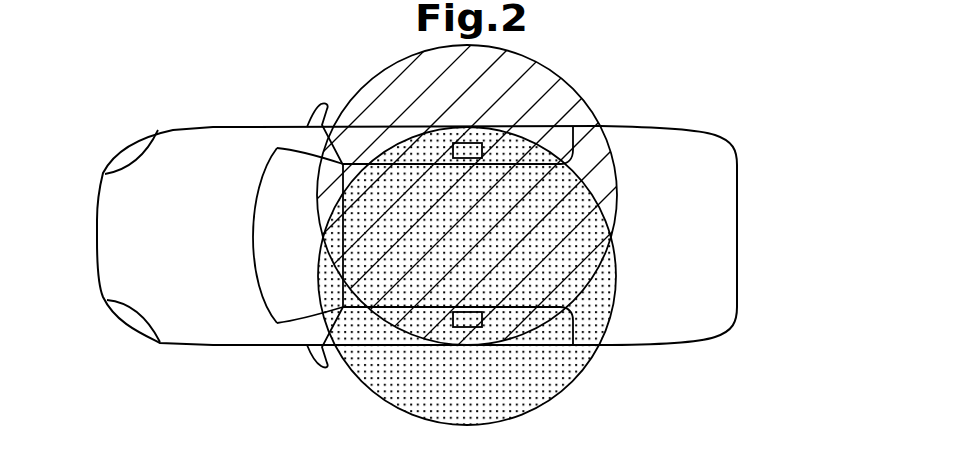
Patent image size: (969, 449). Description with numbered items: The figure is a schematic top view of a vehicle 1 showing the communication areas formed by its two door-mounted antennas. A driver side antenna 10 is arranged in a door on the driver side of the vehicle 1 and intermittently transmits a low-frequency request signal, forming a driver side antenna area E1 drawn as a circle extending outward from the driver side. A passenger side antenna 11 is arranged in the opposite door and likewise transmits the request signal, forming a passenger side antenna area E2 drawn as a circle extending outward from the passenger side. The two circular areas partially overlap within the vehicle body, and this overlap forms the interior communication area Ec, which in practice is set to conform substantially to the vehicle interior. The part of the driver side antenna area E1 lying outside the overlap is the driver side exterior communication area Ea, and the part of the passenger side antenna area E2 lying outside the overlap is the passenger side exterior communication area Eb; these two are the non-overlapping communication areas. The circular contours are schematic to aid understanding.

The vehicle 1 is at (170, 124).
The driver side antenna 10 is at (453, 150).
The passenger side antenna 11 is at (453, 321).
The driver side exterior communication area Ea is at (562, 92).
The passenger side exterior communication area Eb is at (573, 362).
The interior communication area Ec is at (594, 223).
The driver side antenna area E1 is at (356, 96).
The passenger side antenna area E2 is at (338, 371).